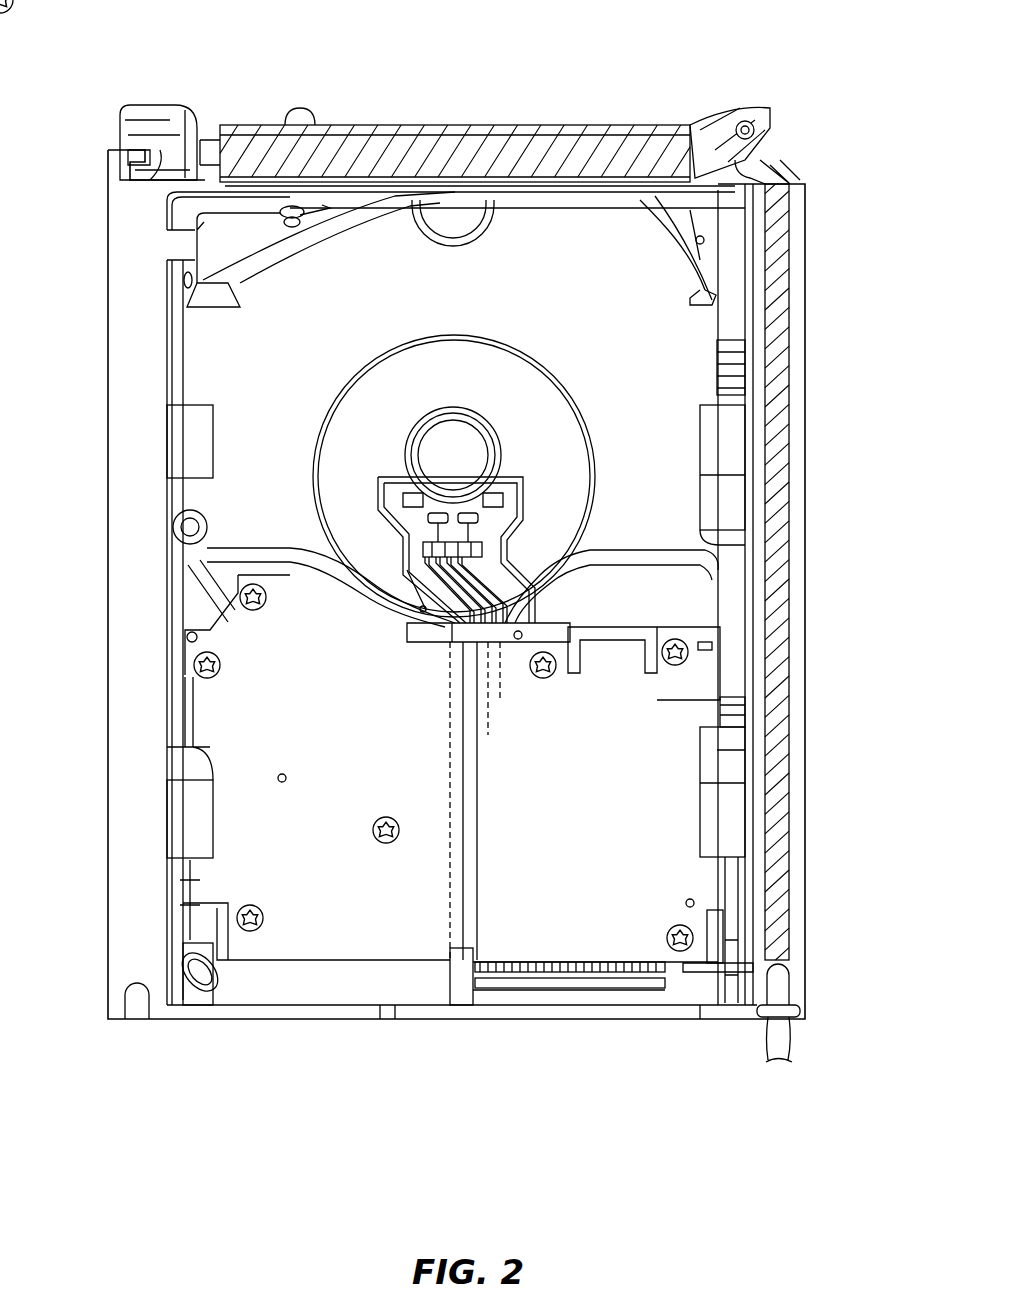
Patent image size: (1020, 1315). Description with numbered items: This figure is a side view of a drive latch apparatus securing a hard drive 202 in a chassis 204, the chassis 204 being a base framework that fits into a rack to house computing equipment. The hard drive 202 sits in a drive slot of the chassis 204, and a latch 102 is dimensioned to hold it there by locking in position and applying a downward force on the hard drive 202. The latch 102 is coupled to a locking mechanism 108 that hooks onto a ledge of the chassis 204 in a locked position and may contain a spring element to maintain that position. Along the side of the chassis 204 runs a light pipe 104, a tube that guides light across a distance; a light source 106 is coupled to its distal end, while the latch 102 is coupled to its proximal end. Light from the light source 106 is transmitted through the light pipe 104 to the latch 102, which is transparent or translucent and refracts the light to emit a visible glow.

The latch 102 is at (455, 125).
The light pipe 104 is at (790, 530).
The light source 106 is at (800, 1005).
The locking mechanism 108 is at (175, 108).
The hard drive 202 is at (260, 512).
The chassis 204 is at (375, 1022).